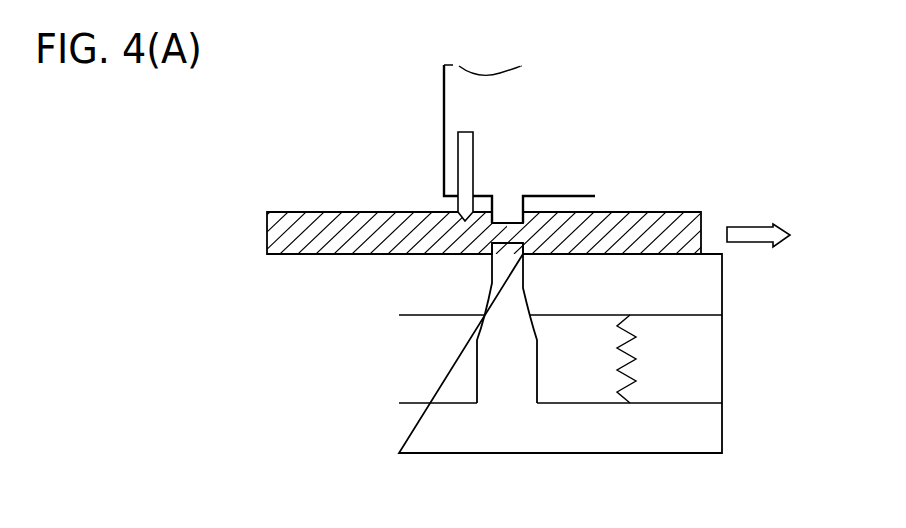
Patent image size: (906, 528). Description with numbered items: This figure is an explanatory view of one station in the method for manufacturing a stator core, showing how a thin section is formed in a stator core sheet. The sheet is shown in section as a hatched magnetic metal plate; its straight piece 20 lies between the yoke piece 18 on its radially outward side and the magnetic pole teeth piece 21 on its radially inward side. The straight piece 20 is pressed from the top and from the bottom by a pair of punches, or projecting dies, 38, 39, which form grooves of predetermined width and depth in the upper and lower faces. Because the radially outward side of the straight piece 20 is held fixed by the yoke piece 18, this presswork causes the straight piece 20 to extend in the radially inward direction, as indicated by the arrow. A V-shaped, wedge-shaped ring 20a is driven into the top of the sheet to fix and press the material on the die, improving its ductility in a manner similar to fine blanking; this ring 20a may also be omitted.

The yoke piece 18 is at (283, 254).
The straight piece 20 is at (423, 232).
The V-shaped ring 20a is at (458, 143).
The magnetic pole teeth piece 21 is at (650, 228).
The punch 38 is at (508, 217).
The punch 39 is at (502, 263).